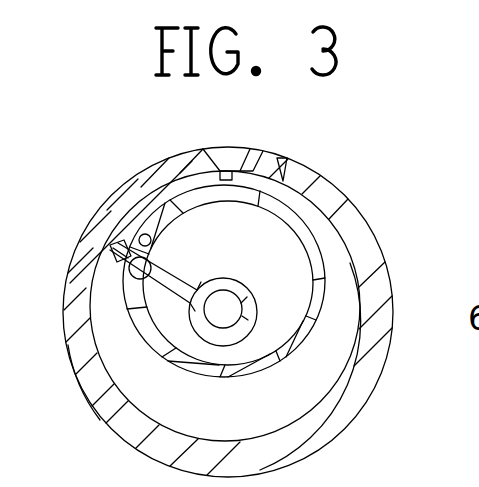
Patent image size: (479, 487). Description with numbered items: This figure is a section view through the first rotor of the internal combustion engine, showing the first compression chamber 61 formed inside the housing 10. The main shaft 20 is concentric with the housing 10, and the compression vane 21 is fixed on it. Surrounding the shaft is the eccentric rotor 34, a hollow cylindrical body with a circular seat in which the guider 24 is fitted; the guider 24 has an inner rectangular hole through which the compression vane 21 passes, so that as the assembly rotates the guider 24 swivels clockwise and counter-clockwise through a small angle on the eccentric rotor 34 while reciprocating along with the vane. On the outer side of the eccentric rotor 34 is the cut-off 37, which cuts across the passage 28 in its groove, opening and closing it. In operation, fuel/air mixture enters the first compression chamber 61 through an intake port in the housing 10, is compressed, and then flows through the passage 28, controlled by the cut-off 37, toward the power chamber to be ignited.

The housing 10 is at (371, 397).
The first compression chamber 61 is at (133, 388).
The cut-off 37 is at (332, 262).
The eccentric rotor 34 is at (303, 310).
The main shaft 20 is at (234, 311).
The guider 24 is at (142, 214).
The compression vane 21 is at (118, 248).
The passage 28 is at (217, 158).